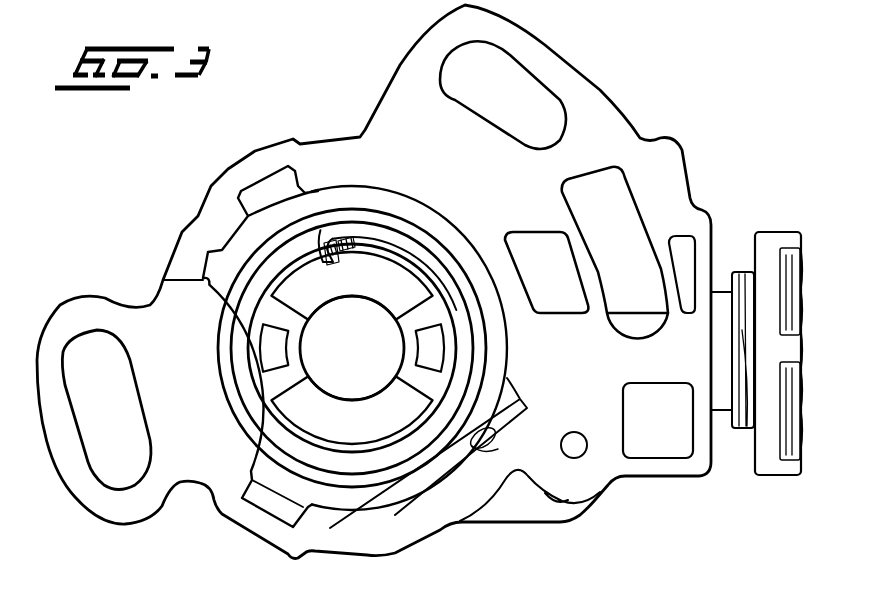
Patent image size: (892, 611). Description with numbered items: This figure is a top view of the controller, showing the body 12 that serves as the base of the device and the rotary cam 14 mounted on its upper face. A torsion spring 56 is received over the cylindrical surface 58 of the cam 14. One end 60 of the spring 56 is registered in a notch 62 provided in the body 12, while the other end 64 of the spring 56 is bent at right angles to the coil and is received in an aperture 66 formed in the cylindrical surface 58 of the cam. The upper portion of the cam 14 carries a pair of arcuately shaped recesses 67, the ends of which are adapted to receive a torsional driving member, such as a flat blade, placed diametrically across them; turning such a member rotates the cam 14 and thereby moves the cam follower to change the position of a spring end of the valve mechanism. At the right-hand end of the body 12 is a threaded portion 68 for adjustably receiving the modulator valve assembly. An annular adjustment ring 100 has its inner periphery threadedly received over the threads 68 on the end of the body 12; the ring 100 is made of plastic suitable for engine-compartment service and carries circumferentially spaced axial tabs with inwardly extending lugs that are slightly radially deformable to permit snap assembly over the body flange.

The body 12 is at (153, 303).
The rotary cam 14 is at (226, 430).
The torsion spring 56 is at (207, 287).
The cylindrical surface 58 is at (360, 245).
The spring end 60 is at (498, 449).
The notch 62 is at (507, 378).
The spring end 64 is at (326, 240).
The aperture 66 is at (352, 348).
The arcuately shaped recesses 67 is at (383, 262).
The threaded portion 68 is at (741, 272).
The annular adjustment ring 100 is at (769, 230).